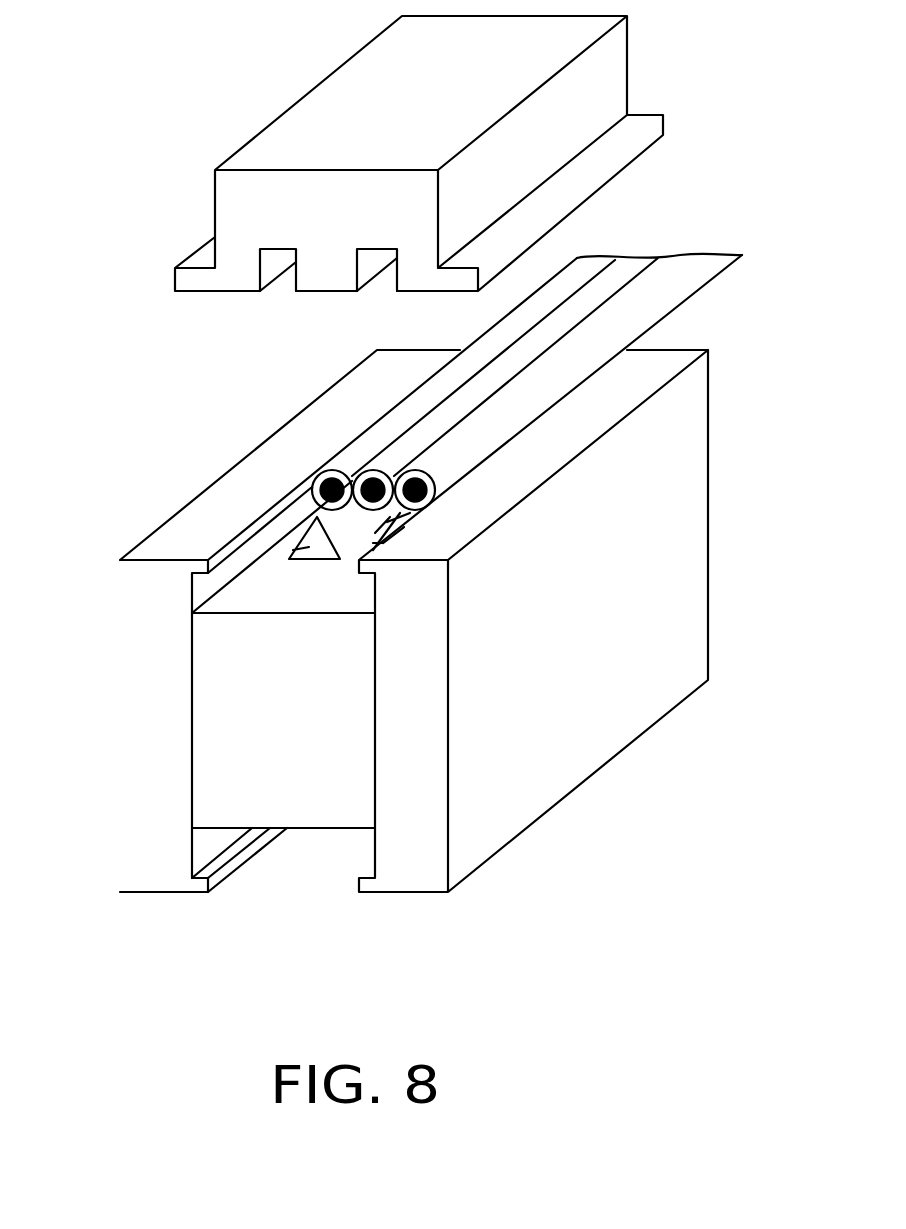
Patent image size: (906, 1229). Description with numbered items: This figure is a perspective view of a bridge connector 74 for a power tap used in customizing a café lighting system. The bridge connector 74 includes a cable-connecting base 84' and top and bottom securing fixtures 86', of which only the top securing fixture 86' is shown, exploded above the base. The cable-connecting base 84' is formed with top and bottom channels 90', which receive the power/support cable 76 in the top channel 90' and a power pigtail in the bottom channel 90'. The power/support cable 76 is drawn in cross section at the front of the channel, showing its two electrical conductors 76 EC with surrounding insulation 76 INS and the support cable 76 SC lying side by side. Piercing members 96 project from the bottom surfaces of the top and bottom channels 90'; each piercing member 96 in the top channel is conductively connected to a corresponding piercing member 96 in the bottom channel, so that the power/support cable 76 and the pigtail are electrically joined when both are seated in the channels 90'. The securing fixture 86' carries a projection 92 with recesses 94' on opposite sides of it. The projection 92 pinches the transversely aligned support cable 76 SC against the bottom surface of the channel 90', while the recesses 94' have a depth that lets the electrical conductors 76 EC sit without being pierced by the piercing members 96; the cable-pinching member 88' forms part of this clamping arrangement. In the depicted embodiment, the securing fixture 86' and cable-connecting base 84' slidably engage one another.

The bridge connector 74 is at (411, 637).
The power/support cable 76 is at (627, 323).
The cable-connecting base 84' is at (431, 573).
The securing fixture 86' is at (419, 153).
The cable-pinching member 88' is at (303, 316).
The channel 90' is at (218, 686).
The projection 92 is at (352, 282).
The recesses 94' is at (263, 260).
The piercing members 96 is at (292, 553).